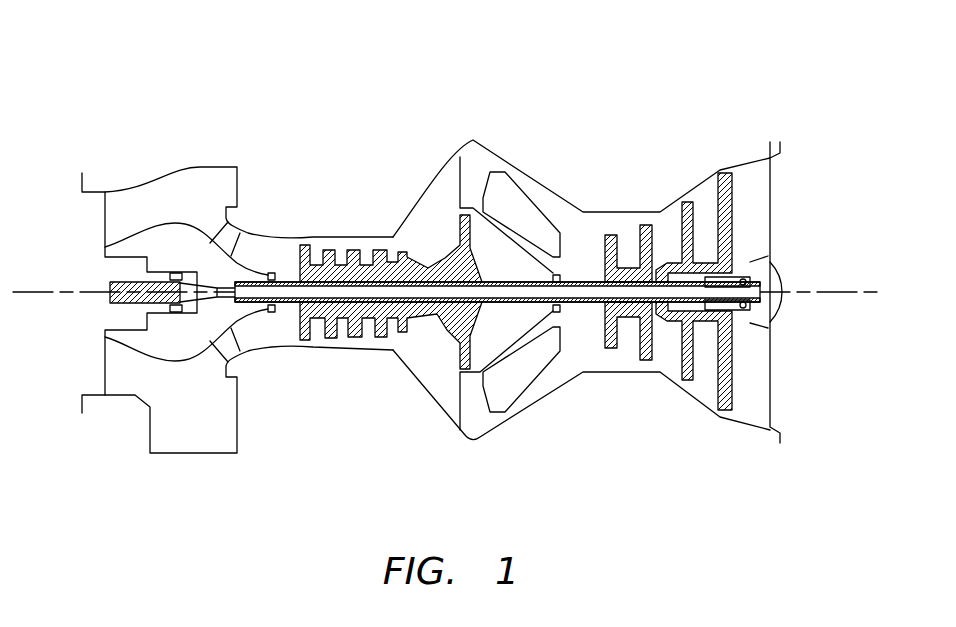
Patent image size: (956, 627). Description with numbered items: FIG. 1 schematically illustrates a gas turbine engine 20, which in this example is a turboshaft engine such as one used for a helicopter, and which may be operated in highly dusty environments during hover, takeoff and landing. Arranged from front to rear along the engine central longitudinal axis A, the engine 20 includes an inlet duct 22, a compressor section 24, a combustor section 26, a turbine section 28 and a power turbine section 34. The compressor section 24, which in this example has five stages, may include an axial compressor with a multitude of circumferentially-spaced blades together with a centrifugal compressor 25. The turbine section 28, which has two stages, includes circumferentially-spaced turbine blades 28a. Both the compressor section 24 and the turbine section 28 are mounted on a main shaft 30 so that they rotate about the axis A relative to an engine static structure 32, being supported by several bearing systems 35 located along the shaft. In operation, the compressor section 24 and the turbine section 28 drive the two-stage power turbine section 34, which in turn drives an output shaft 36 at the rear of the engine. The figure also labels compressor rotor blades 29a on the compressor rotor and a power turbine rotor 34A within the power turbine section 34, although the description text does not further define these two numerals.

The gas turbine engine 20 is at (800, 88).
The inlet duct 22 is at (110, 218).
The compressor section 24 is at (300, 133).
The centrifugal compressor 25 is at (460, 355).
The combustor section 26 is at (488, 133).
The turbine section 28 is at (600, 387).
The turbine blades 28a is at (648, 228).
The compressor rotor blades 29a is at (387, 337).
The main shaft 30 is at (575, 277).
The engine static structure 32 is at (273, 352).
The power turbine section 34 is at (667, 430).
The power turbine rotor 34A is at (733, 233).
The bearing systems 35 is at (268, 273).
The output shaft 36 is at (107, 330).
The engine central longitudinal axis A is at (846, 293).